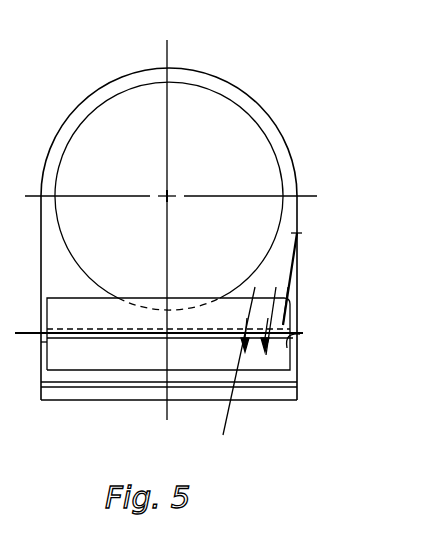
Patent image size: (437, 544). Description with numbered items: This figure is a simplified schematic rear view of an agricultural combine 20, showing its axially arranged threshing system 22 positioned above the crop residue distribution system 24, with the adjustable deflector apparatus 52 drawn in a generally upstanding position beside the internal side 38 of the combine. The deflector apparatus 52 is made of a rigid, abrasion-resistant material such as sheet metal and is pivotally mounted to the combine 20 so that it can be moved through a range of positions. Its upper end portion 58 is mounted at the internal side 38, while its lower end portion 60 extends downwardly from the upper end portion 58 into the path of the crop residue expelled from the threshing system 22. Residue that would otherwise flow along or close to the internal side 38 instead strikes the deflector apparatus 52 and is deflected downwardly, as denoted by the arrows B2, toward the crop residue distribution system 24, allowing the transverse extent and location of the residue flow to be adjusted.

The agricultural combine 20 is at (265, 83).
The threshing system 22 is at (280, 126).
The crop residue distribution system 24 is at (294, 307).
The internal side 38 is at (294, 345).
The adjustable deflector apparatus 52 is at (300, 257).
The upper end portion 58 is at (292, 243).
The lower end portion 60 is at (273, 345).
The arrows B2 is at (231, 378).